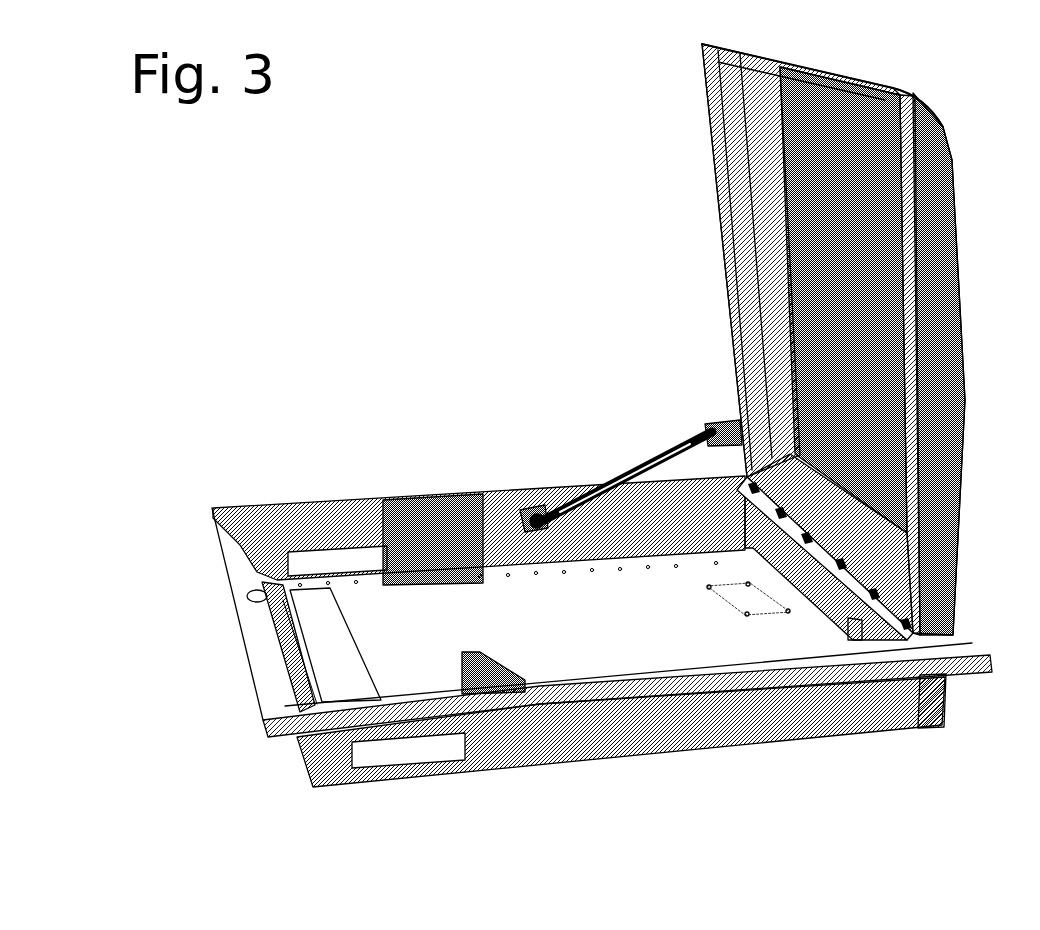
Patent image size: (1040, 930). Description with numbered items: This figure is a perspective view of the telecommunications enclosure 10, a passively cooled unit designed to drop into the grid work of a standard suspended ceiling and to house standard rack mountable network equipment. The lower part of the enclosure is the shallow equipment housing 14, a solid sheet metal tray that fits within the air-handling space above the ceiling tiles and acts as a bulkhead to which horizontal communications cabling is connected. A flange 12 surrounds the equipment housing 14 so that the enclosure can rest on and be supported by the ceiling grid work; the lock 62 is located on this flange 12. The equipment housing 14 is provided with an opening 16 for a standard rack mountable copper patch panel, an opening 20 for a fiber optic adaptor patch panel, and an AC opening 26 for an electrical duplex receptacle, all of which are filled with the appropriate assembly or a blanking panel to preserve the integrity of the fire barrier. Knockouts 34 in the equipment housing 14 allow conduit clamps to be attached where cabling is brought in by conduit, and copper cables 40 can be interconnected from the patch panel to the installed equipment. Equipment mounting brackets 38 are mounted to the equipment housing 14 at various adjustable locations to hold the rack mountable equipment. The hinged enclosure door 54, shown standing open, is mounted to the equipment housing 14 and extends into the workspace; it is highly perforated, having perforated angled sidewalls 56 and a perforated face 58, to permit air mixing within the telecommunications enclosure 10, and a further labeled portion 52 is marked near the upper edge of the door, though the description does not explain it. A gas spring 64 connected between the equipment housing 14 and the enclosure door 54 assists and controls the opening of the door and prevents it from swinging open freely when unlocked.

The telecommunications enclosure 10 is at (350, 310).
The flange 12 is at (233, 522).
The equipment housing 14 is at (872, 697).
The opening 16 is at (350, 678).
The opening 20 is at (328, 558).
The AC opening 26 is at (737, 601).
The knockouts 34 is at (755, 530).
The equipment mounting brackets 38 is at (405, 548).
The copper cables 40 is at (848, 626).
The lid top edge 52 is at (822, 85).
The enclosure door 54 is at (900, 200).
The perforated angled sidewalls 56 is at (938, 332).
The perforated face 58 is at (843, 160).
The lock 62 is at (247, 598).
The gas spring 64 is at (612, 470).